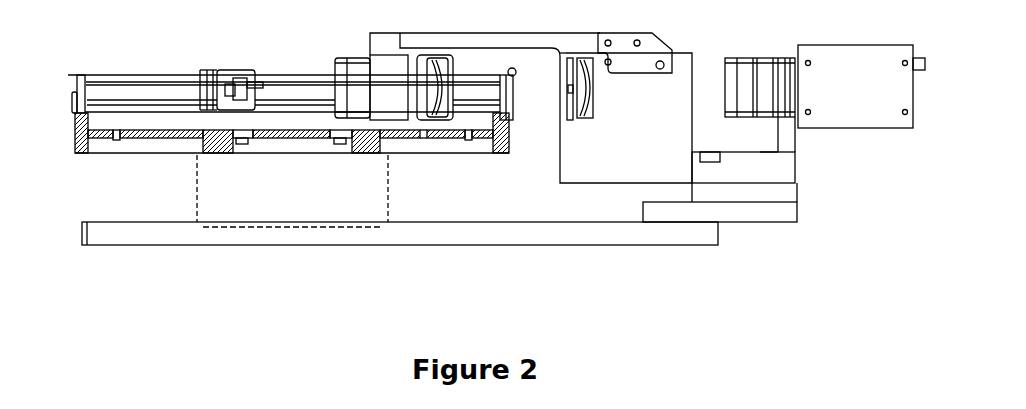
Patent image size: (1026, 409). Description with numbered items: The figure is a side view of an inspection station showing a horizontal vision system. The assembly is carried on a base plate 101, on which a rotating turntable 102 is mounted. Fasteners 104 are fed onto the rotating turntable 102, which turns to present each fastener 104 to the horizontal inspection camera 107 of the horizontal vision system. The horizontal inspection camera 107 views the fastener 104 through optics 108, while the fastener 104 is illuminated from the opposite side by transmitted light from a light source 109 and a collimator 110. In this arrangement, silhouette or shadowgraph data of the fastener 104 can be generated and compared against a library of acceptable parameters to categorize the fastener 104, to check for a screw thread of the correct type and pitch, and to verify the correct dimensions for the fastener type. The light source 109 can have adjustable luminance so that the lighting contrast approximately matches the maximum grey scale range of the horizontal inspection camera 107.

The base plate 101 is at (718, 237).
The rotating turntable 102 is at (74, 119).
The fastener 104 is at (515, 83).
The horizontal inspection camera 107 is at (842, 85).
The optics 108 is at (593, 107).
The light source 109 is at (220, 75).
The collimator 110 is at (436, 62).